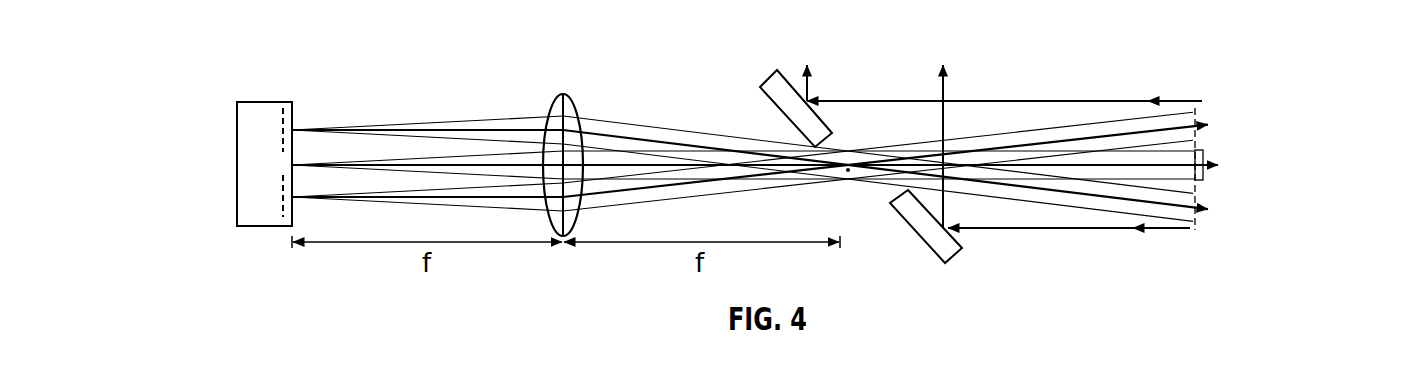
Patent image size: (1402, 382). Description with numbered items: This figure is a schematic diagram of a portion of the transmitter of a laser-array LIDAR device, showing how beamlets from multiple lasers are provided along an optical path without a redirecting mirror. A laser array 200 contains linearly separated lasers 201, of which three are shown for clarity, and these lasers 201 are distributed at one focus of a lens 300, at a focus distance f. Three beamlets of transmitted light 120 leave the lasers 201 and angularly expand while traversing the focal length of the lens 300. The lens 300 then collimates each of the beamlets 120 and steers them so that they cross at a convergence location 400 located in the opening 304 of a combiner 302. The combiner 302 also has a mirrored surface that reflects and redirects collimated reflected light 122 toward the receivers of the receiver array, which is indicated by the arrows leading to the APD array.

The laser array 200 is at (264, 236).
The laser 201 is at (280, 130).
The transmitted light (beamlets) 120 is at (415, 135).
The collimated reflected light 122 is at (1083, 100).
The lens 300 is at (548, 98).
The combiner 302 is at (947, 262).
The opening 304 is at (849, 181).
The convergence location 400 is at (859, 141).